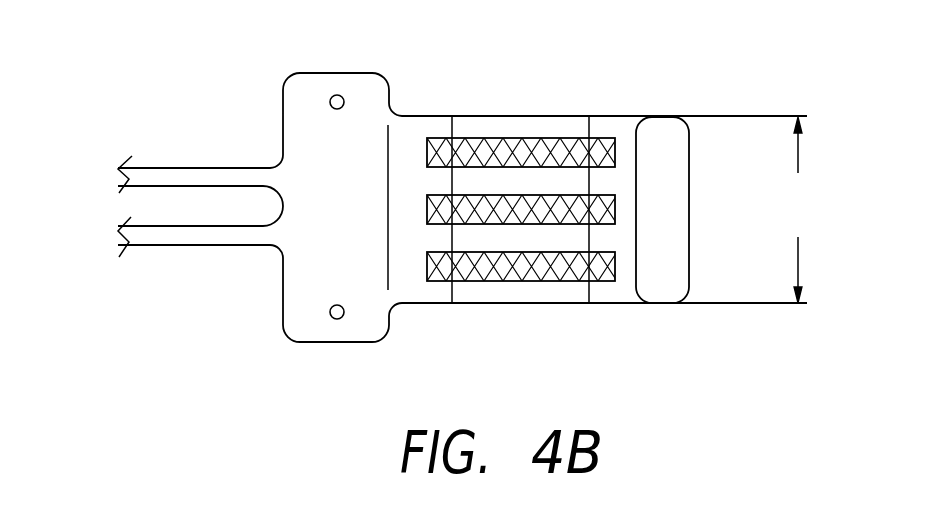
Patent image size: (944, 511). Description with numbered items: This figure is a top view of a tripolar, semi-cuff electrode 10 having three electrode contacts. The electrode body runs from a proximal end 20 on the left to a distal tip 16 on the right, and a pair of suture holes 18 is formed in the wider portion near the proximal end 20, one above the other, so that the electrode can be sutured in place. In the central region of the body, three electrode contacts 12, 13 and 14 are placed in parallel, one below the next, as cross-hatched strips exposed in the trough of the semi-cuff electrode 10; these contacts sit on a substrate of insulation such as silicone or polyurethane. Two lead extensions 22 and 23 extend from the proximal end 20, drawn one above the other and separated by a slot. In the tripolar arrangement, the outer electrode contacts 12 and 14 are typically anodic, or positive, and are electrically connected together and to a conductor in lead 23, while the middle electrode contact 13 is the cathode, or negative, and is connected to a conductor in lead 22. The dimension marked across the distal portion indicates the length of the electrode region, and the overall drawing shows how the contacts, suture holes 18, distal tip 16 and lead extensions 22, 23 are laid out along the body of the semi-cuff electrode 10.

The semi-cuff electrode 10 is at (695, 88).
The electrode contact 12 is at (520, 138).
The electrode contact 13 is at (615, 210).
The electrode contact 14 is at (520, 281).
The distal tip 16 is at (382, 78).
The suture holes 18 is at (337, 95).
The proximal end 20 is at (273, 89).
The lead extension 22 is at (170, 168).
The lead extension 23 is at (170, 245).